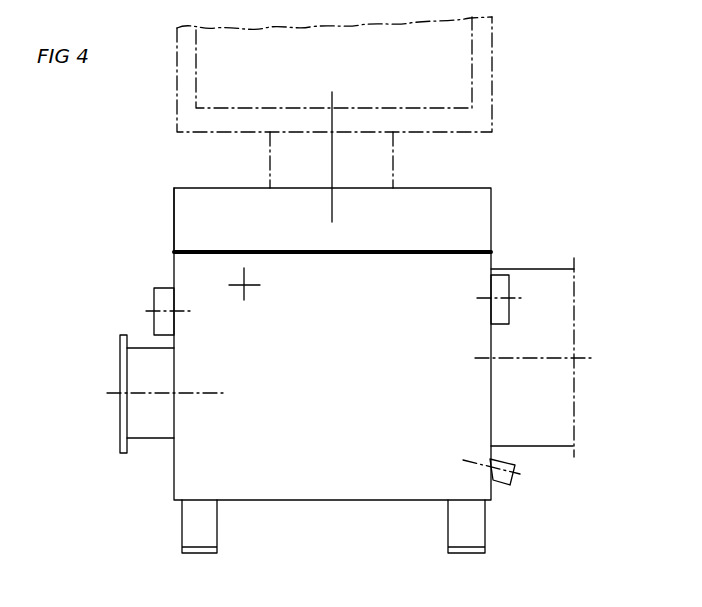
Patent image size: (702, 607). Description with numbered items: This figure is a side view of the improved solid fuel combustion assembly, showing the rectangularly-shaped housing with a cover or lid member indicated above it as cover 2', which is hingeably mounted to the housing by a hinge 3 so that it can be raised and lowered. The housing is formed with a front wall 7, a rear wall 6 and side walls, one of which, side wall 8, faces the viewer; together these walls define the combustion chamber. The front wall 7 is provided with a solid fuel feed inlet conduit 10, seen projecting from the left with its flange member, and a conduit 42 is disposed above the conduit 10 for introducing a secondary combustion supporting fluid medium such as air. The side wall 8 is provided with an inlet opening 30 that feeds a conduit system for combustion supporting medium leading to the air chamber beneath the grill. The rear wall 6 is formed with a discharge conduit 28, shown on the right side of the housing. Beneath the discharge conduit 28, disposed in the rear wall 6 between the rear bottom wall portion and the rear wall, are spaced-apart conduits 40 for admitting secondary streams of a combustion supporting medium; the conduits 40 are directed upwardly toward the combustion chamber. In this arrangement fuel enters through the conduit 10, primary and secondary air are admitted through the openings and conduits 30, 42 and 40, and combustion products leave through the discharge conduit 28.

The upper container / vessel 2' is at (365, 74).
The hinge 3 is at (375, 170).
The rear wall 6 is at (491, 251).
The front wall 7 is at (174, 260).
The side wall 8 is at (302, 470).
The solid fuel feed inlet conduit 10 is at (147, 408).
The discharge conduit 28 is at (557, 295).
The inlet openings 30 is at (503, 285).
The conduits 40 is at (502, 485).
The conduit 42 is at (160, 300).